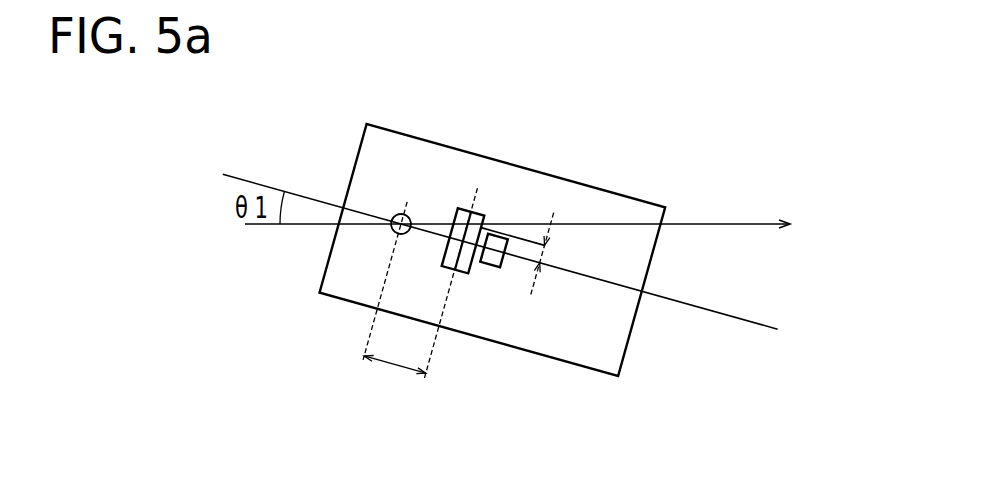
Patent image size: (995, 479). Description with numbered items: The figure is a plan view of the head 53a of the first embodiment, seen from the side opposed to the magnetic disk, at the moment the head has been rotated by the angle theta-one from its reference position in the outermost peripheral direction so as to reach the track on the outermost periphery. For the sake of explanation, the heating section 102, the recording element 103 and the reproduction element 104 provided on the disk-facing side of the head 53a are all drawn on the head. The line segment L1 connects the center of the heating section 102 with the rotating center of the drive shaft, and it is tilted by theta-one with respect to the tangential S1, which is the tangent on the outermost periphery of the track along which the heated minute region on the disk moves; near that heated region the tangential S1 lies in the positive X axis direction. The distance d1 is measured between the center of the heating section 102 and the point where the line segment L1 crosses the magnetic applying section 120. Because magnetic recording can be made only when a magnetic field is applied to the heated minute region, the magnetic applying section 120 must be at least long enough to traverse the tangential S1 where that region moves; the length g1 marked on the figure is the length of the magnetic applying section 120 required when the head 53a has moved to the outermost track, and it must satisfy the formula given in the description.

The head 53a is at (598, 207).
The heating section 102 is at (394, 232).
The recording element 103 is at (478, 211).
The reproduction element 104 is at (491, 266).
The magnetic applying section 120 is at (447, 253).
The line segment L1 is at (480, 242).
The tangential S1 is at (540, 226).
The distance d1 is at (420, 288).
The length of the magnetic applying section g1 is at (548, 257).